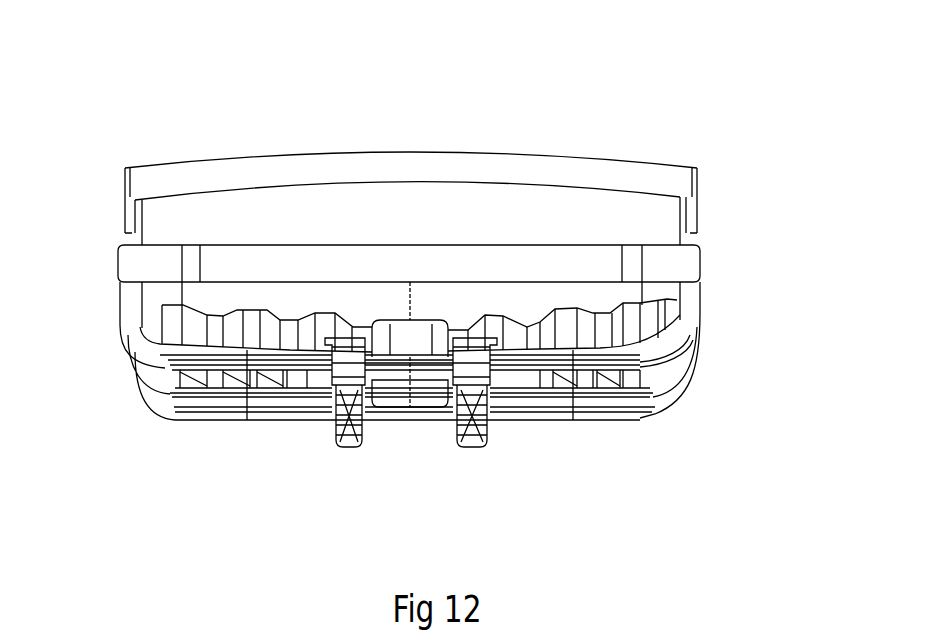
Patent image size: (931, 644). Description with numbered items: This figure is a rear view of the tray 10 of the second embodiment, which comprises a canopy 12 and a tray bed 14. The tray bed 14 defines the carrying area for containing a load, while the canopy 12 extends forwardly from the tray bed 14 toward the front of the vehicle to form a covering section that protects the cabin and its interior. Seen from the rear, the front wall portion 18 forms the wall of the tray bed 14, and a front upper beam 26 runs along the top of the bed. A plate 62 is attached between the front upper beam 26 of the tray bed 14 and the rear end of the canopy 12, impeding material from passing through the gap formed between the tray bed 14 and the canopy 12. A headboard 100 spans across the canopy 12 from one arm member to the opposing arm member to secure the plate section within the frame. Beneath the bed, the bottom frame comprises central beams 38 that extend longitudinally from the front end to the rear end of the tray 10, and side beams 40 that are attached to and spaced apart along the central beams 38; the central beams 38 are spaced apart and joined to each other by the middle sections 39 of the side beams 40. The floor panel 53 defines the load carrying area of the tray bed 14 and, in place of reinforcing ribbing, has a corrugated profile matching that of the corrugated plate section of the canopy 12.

The tray 10 is at (160, 131).
The canopy 12 is at (228, 158).
The headboard 100 is at (410, 166).
The tray bed 14 is at (562, 296).
The plate 62 is at (640, 217).
The front wall portion 18 is at (613, 294).
The front upper beam 26 is at (167, 263).
The side beams 40 is at (688, 315).
The floor panel 53 is at (145, 398).
The central beams 38 is at (322, 405).
The middle sections 39 is at (430, 373).